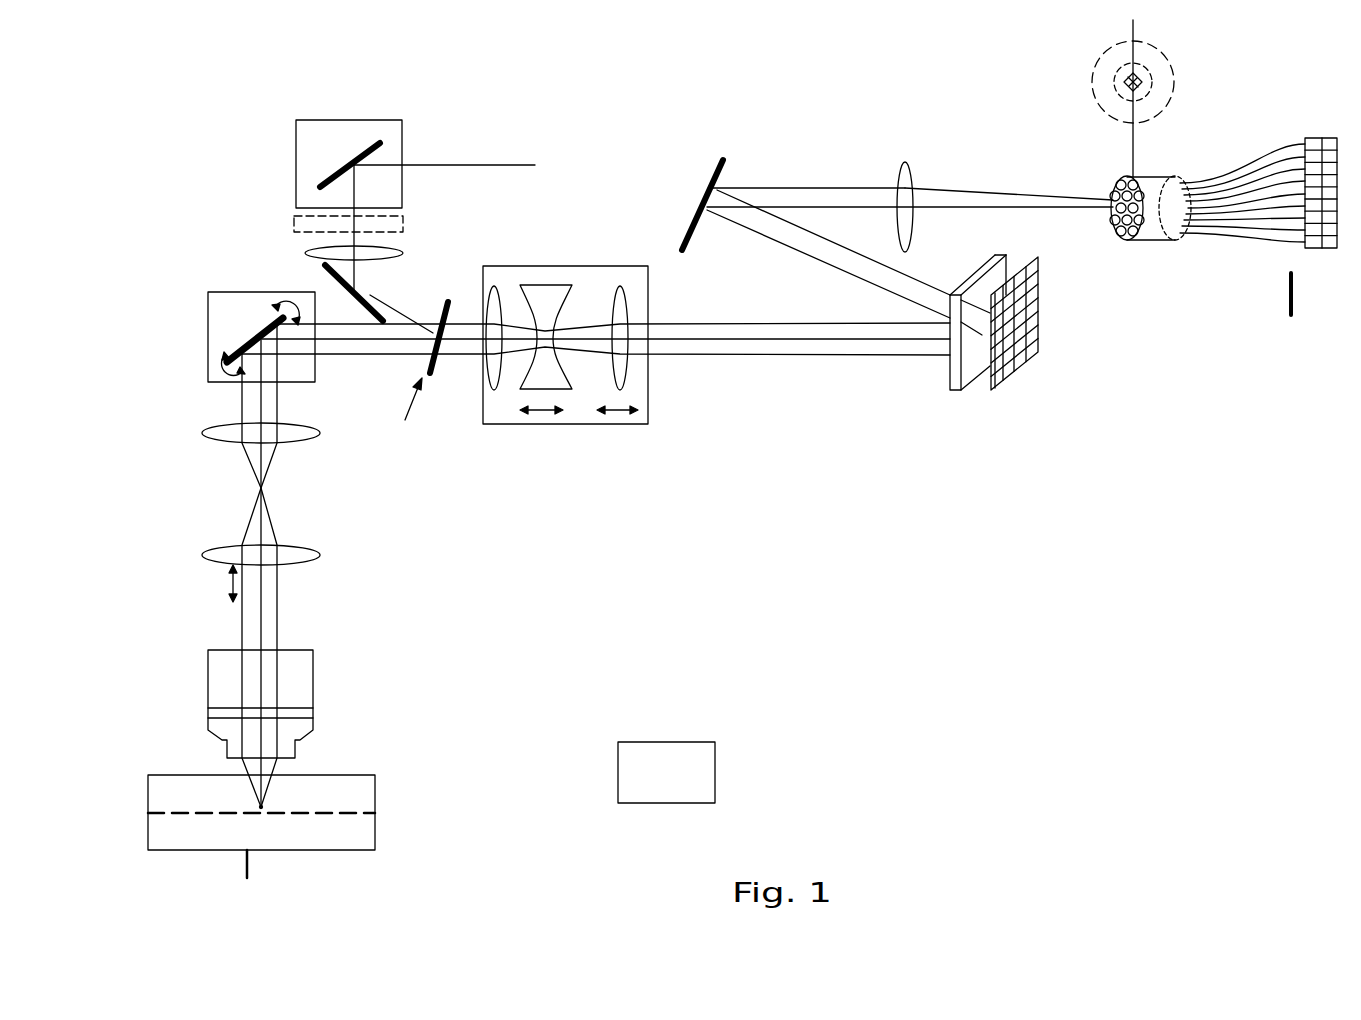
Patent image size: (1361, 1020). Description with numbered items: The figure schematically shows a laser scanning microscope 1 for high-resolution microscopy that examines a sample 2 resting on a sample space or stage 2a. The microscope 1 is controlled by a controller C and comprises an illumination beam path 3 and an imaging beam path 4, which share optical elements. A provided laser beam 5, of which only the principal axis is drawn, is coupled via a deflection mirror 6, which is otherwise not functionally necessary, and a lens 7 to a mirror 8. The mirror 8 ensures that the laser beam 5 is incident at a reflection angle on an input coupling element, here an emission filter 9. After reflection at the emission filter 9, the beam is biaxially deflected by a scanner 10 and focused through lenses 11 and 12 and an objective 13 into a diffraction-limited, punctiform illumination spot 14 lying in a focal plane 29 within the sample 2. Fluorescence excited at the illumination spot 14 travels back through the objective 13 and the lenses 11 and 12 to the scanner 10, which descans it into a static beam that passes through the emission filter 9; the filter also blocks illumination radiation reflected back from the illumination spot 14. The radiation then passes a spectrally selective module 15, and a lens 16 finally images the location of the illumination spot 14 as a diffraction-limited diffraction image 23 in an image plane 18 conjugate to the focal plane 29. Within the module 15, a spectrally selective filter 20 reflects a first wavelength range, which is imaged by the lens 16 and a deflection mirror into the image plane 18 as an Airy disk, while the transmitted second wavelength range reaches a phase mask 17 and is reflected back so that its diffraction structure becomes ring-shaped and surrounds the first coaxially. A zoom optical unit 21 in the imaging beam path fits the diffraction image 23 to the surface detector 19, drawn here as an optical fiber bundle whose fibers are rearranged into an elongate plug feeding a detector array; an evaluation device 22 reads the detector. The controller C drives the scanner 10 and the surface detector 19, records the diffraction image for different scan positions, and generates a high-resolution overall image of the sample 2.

The laser scanning microscope 1 is at (597, 560).
The sample 2 is at (358, 832).
The sample space or stage 2a is at (252, 875).
The illumination beam path 3 is at (219, 209).
The imaging beam path 4 is at (1097, 256).
The laser beam 5 is at (473, 165).
The deflection mirror 6 is at (348, 120).
The lens 7 is at (402, 252).
The mirror 8 is at (326, 275).
The emission filter 9 is at (443, 365).
The scanner 10 is at (221, 305).
The lens 11 is at (211, 435).
The lens 12 is at (215, 553).
The objective 13 is at (218, 667).
The illumination spot 14 is at (257, 808).
The module 15 is at (290, 220).
The lens 16 is at (905, 160).
The phase mask 17 is at (1005, 392).
The image plane 18 is at (1130, 241).
The surface detector 19 is at (1243, 266).
The spectrally selective filter 20 is at (957, 393).
The zoom optical unit 21 is at (575, 424).
The evaluation device 22 is at (1292, 311).
The diffraction image 23 is at (1180, 58).
The focal plane 29 is at (357, 805).
The controller C is at (710, 773).